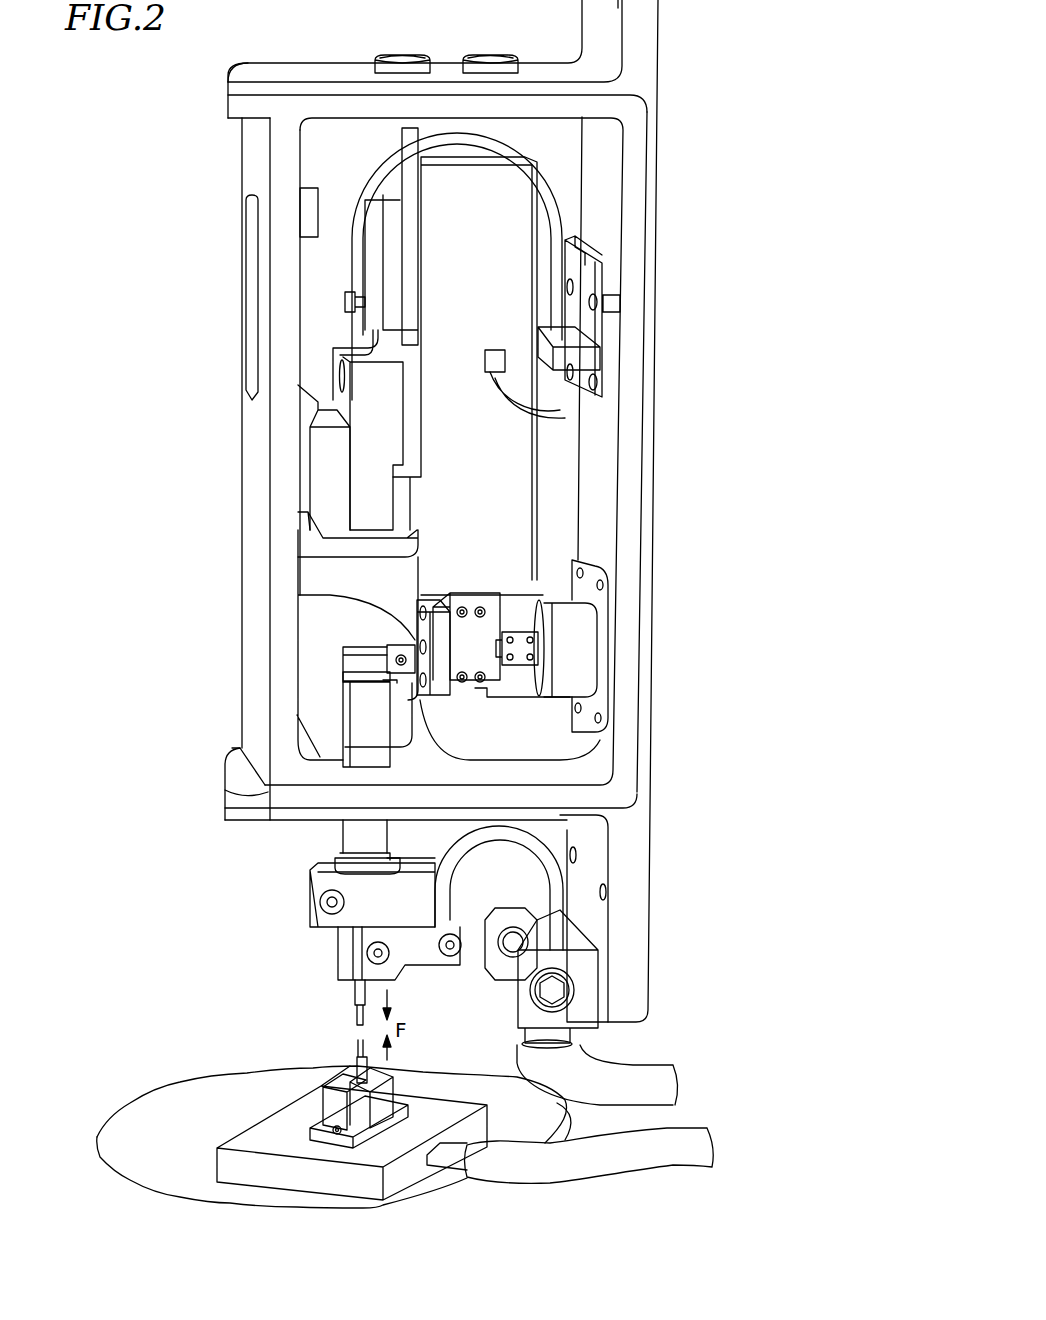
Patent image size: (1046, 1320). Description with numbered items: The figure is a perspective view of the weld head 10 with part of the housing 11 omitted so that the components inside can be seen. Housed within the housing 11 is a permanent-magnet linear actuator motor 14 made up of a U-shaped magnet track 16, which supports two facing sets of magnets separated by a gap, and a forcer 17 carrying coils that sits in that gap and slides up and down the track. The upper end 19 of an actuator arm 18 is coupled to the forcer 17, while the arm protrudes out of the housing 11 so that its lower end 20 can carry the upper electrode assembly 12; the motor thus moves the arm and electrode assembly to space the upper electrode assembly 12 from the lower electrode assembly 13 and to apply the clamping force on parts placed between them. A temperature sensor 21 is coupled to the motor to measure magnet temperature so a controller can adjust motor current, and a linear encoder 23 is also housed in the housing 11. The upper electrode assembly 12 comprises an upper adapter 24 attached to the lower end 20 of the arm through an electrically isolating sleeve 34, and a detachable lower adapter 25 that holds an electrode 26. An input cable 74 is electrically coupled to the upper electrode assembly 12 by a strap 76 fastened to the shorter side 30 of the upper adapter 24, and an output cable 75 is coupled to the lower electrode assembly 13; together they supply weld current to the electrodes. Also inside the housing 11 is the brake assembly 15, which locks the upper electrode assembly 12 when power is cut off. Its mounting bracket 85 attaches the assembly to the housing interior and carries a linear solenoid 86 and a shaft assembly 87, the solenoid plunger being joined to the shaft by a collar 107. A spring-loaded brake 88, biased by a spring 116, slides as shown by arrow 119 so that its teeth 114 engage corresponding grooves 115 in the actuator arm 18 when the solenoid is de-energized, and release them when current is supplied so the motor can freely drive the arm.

The weld head 10 is at (764, 139).
The housing 11 is at (597, 105).
The upper electrode assembly 12 is at (265, 907).
The lower electrode assembly 13 is at (222, 1100).
The permanent-magnet linear actuator motor 14 is at (520, 444).
The brake assembly 15 is at (544, 722).
The U-shaped magnet track 16 is at (480, 477).
The forcer 17 is at (412, 333).
The actuator arm 18 is at (343, 818).
The upper end of the actuator arm 19 is at (372, 372).
The lower end of the actuator arm 20 is at (350, 853).
The temperature sensor 21 is at (497, 358).
The linear encoder 23 is at (338, 558).
The upper adapter 24 is at (350, 880).
The lower adapter 25 is at (372, 935).
The electrode 26 is at (358, 988).
The shorter side of the upper adapter 30 is at (447, 890).
The sleeve 34 is at (345, 870).
The input cable 74 is at (623, 1073).
The output cable 75 is at (678, 1142).
The strap 76 is at (560, 820).
The mounting bracket 85 is at (585, 562).
The linear solenoid 86 is at (582, 653).
The shaft assembly 87 is at (470, 640).
The spring-loaded brake 88 is at (390, 647).
The collar 107 is at (523, 640).
The teeth 114 is at (385, 662).
The grooves 115 is at (388, 680).
The spring 116 is at (418, 643).
The arrow 119 is at (397, 683).